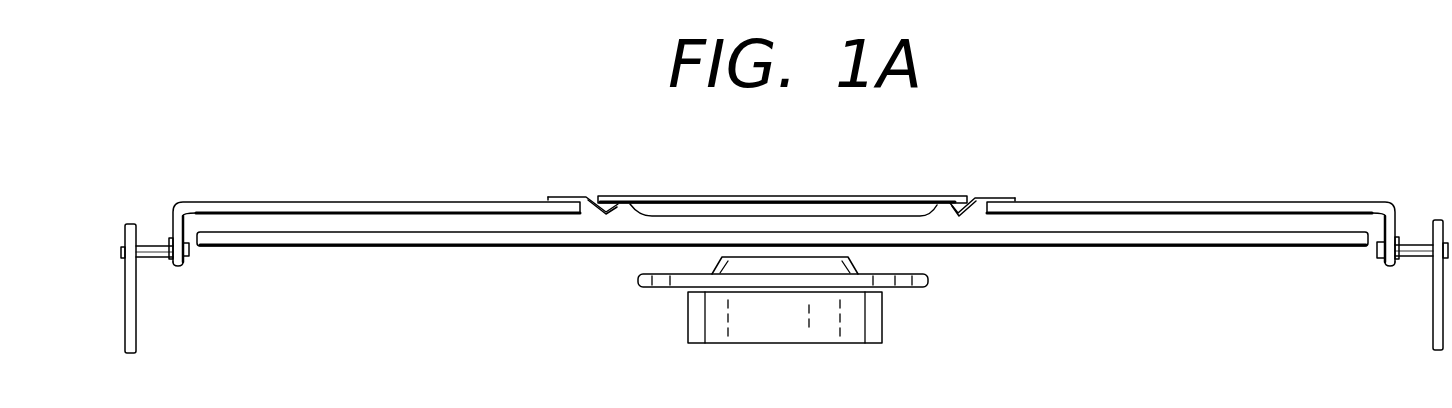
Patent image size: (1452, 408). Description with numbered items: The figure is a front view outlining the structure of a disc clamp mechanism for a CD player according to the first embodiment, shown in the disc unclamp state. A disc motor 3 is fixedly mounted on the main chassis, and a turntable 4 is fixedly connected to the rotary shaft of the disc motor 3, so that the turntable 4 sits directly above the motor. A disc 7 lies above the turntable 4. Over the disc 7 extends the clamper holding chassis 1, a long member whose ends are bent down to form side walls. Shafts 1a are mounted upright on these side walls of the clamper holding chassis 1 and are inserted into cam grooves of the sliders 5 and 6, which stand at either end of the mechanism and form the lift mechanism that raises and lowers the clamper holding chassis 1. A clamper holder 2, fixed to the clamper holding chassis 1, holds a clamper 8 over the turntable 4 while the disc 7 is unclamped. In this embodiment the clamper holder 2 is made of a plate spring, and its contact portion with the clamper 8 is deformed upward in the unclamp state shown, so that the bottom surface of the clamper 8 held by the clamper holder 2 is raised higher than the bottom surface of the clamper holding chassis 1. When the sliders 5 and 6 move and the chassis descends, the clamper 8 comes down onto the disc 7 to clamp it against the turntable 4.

The clamper holding chassis 1 is at (400, 203).
The shaft 1a is at (150, 248).
The clamper holder 2 is at (590, 200).
The disc motor 3 is at (872, 317).
The turntable 4 is at (924, 277).
The slider 5 is at (130, 325).
The slider 6 is at (1436, 330).
The disc 7 is at (517, 247).
The clamper 8 is at (878, 196).